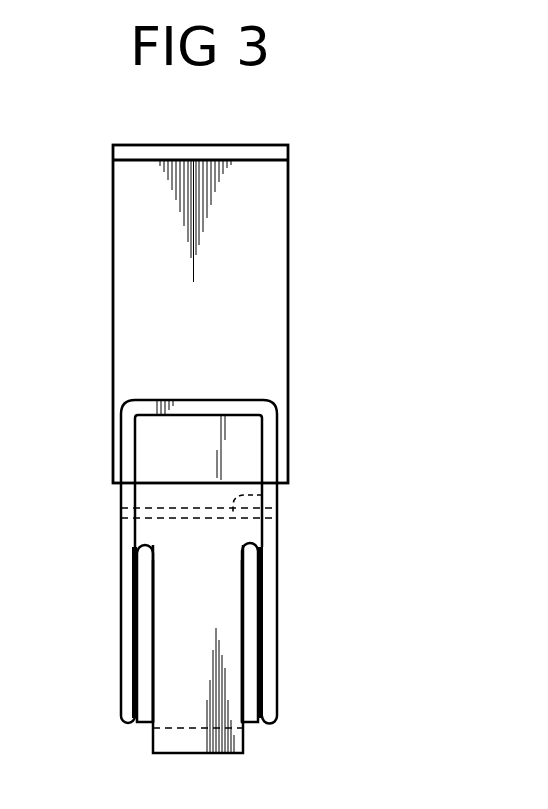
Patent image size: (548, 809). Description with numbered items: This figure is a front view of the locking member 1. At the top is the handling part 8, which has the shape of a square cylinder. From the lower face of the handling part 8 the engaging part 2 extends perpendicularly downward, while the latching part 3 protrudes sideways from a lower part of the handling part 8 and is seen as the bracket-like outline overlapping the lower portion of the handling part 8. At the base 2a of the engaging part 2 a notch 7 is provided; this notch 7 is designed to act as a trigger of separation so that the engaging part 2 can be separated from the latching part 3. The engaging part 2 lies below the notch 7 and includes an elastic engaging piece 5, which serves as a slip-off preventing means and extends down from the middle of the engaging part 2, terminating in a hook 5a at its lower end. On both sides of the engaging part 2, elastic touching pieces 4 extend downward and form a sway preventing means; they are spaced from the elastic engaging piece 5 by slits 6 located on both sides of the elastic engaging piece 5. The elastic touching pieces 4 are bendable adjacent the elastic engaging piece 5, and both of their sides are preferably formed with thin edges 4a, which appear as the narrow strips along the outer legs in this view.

The locking member 1 is at (342, 256).
The engaging part 2 is at (181, 636).
The base of the engaging part 2a is at (150, 495).
The latching part 3 is at (253, 405).
The elastic touching pieces 4 is at (123, 593).
The thin edges 4a is at (133, 638).
The elastic engaging piece 5 is at (177, 698).
The hook 5a is at (192, 742).
The slits 6 is at (147, 678).
The notch 7 is at (285, 503).
The handling part 8 is at (133, 280).